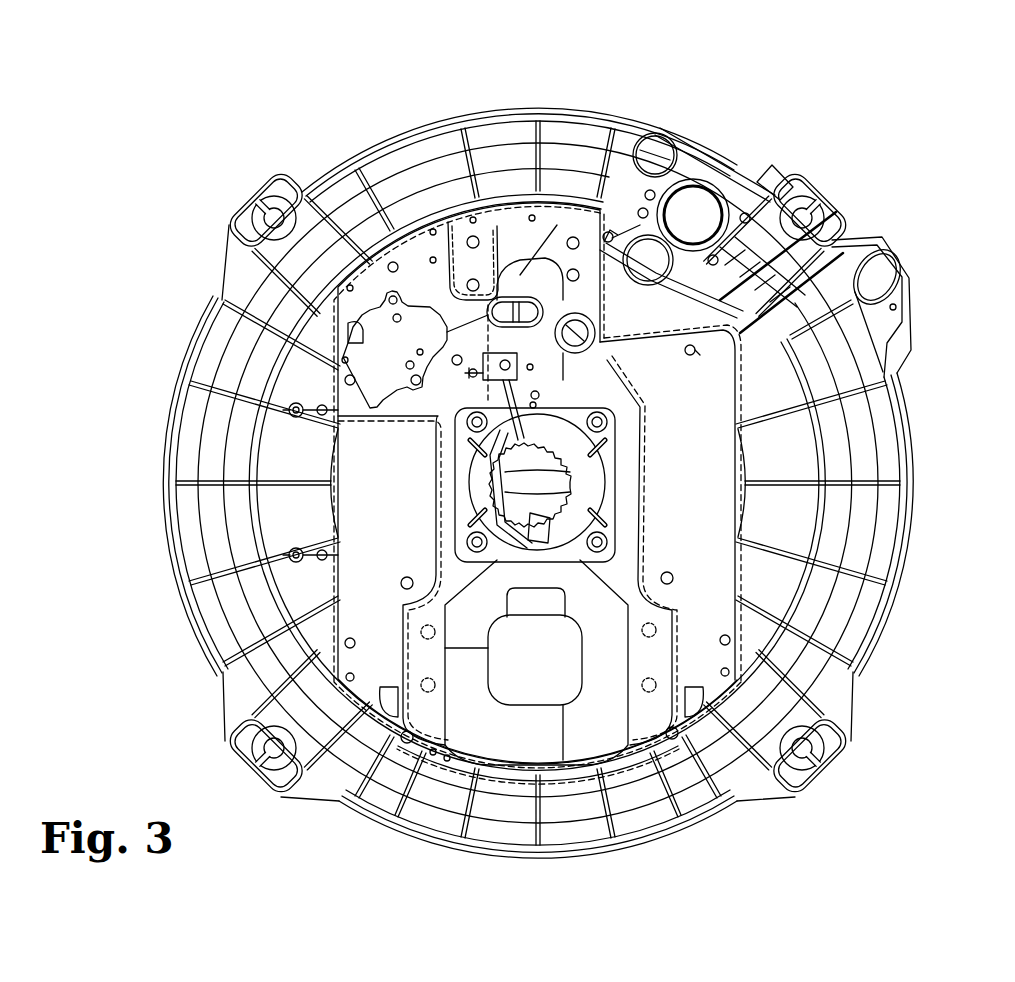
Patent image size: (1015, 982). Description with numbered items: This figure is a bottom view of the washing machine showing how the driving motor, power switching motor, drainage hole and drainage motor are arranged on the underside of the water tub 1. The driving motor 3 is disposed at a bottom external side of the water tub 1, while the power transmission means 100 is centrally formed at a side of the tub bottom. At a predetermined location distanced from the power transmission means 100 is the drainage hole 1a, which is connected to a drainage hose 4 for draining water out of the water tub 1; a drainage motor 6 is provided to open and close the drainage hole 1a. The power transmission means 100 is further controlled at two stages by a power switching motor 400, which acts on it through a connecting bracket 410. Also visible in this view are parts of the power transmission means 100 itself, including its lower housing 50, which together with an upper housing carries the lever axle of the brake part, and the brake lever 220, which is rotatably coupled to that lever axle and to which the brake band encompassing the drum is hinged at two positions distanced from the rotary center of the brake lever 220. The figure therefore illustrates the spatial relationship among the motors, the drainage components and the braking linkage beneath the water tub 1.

The water tub 1 is at (892, 618).
The drainage hole 1a is at (650, 260).
The driving motor 3 is at (585, 735).
The drainage hose 4 is at (795, 262).
The drainage motor 6 is at (607, 355).
The lower housing 50 is at (460, 495).
The power transmission means 100 is at (600, 487).
The brake lever 220 is at (545, 300).
The power switching motor 400 is at (370, 372).
The connecting bracket 410 is at (520, 300).